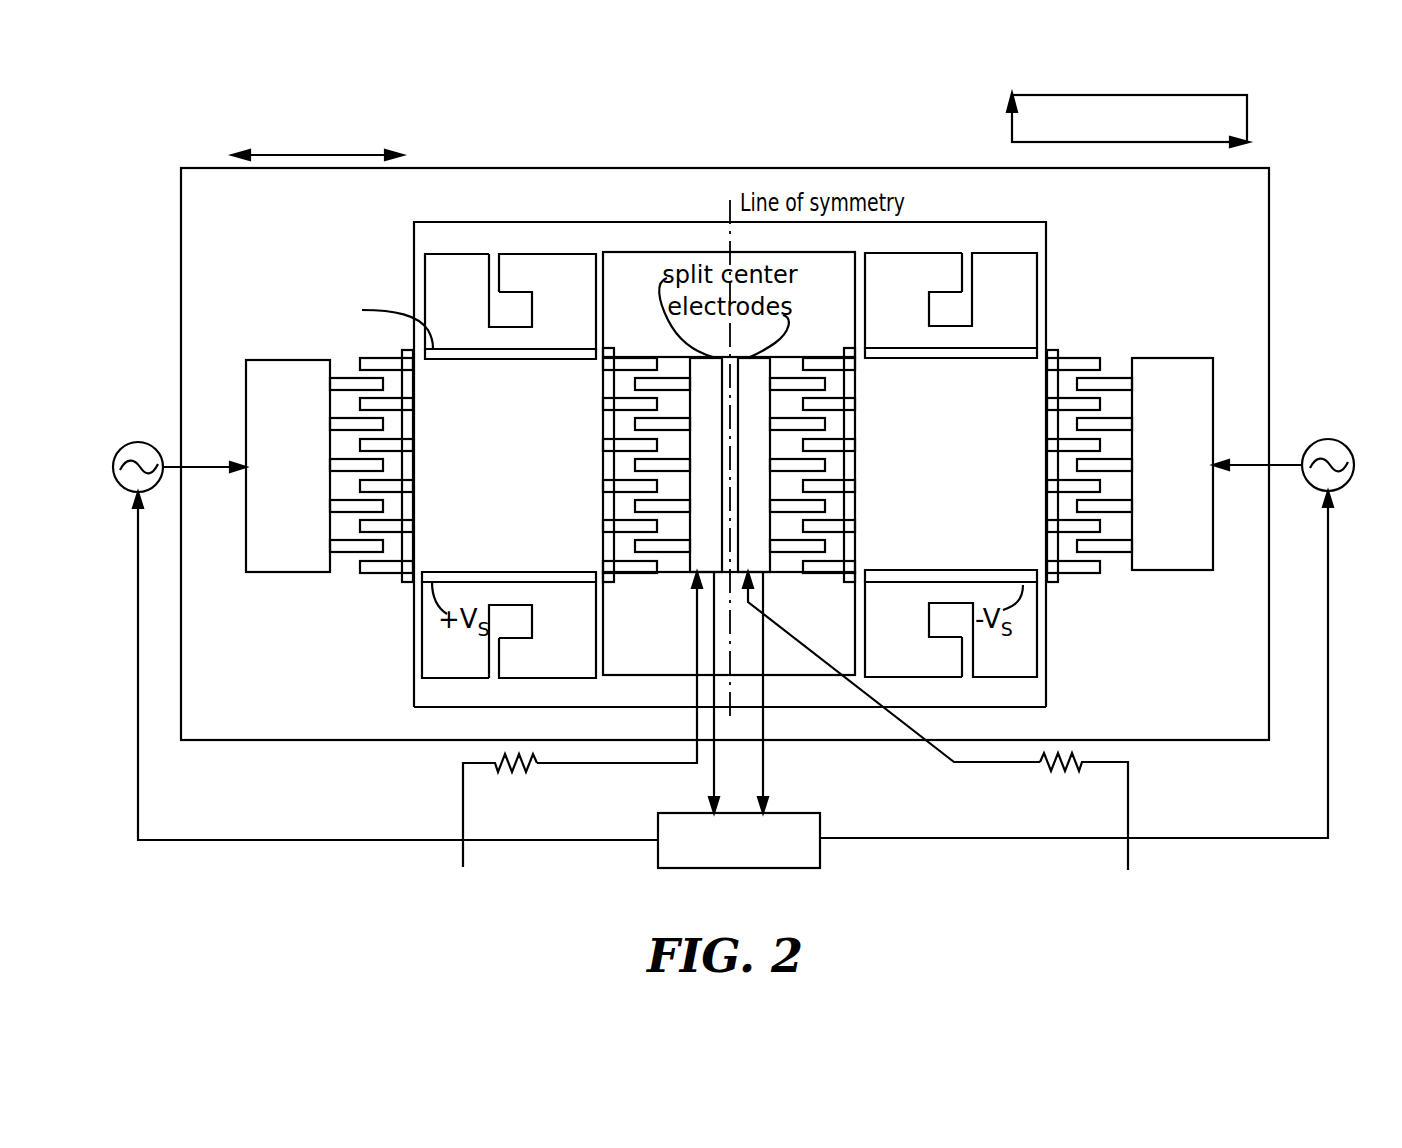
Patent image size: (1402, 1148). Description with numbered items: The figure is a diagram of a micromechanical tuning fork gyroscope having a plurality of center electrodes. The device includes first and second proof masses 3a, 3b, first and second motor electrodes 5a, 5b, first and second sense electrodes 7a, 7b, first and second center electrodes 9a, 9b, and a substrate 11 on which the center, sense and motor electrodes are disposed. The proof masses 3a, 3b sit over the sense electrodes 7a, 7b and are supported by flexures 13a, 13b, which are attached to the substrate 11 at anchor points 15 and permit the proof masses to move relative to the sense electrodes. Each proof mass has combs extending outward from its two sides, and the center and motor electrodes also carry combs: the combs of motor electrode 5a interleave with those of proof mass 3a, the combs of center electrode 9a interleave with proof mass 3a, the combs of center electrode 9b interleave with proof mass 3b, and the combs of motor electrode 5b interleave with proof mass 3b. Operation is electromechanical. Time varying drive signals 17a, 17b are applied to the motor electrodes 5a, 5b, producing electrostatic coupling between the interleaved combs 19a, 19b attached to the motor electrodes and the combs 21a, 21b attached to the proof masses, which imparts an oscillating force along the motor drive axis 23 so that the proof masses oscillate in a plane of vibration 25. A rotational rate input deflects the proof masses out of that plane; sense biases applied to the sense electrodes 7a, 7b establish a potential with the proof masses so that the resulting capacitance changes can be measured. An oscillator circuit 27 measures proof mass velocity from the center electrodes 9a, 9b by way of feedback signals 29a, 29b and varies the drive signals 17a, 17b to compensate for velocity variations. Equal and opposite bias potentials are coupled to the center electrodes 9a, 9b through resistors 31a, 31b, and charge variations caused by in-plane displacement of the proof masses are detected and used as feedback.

The first proof mass 3a is at (505, 541).
The second proof mass 3b is at (951, 533).
The first motor electrode 5a is at (286, 521).
The second motor electrode 5b is at (1153, 505).
The first sense electrode 7a is at (466, 347).
The second sense electrode 7b is at (1010, 347).
The first center electrode 9a is at (705, 358).
The second center electrode 9b is at (772, 357).
The substrate 11 is at (198, 735).
The first flexure 13a is at (525, 226).
The second flexure 13b is at (799, 693).
The anchor point 15 is at (517, 312).
The first time varying drive signal 17a is at (151, 442).
The second time varying drive signal 17b is at (1313, 440).
The motor electrode combs 19a is at (340, 572).
The motor electrode combs 19b is at (1117, 572).
The proof mass combs 21a is at (380, 600).
The proof mass combs 21b is at (1077, 590).
The motor drive axis 23 is at (317, 140).
The plane of vibration 25 is at (1128, 120).
The oscillator circuit 27 is at (806, 868).
The first feedback signal 29a is at (704, 781).
The second feedback signal 29b is at (775, 774).
The first resistor 31a is at (569, 737).
The second resistor 31b is at (950, 737).